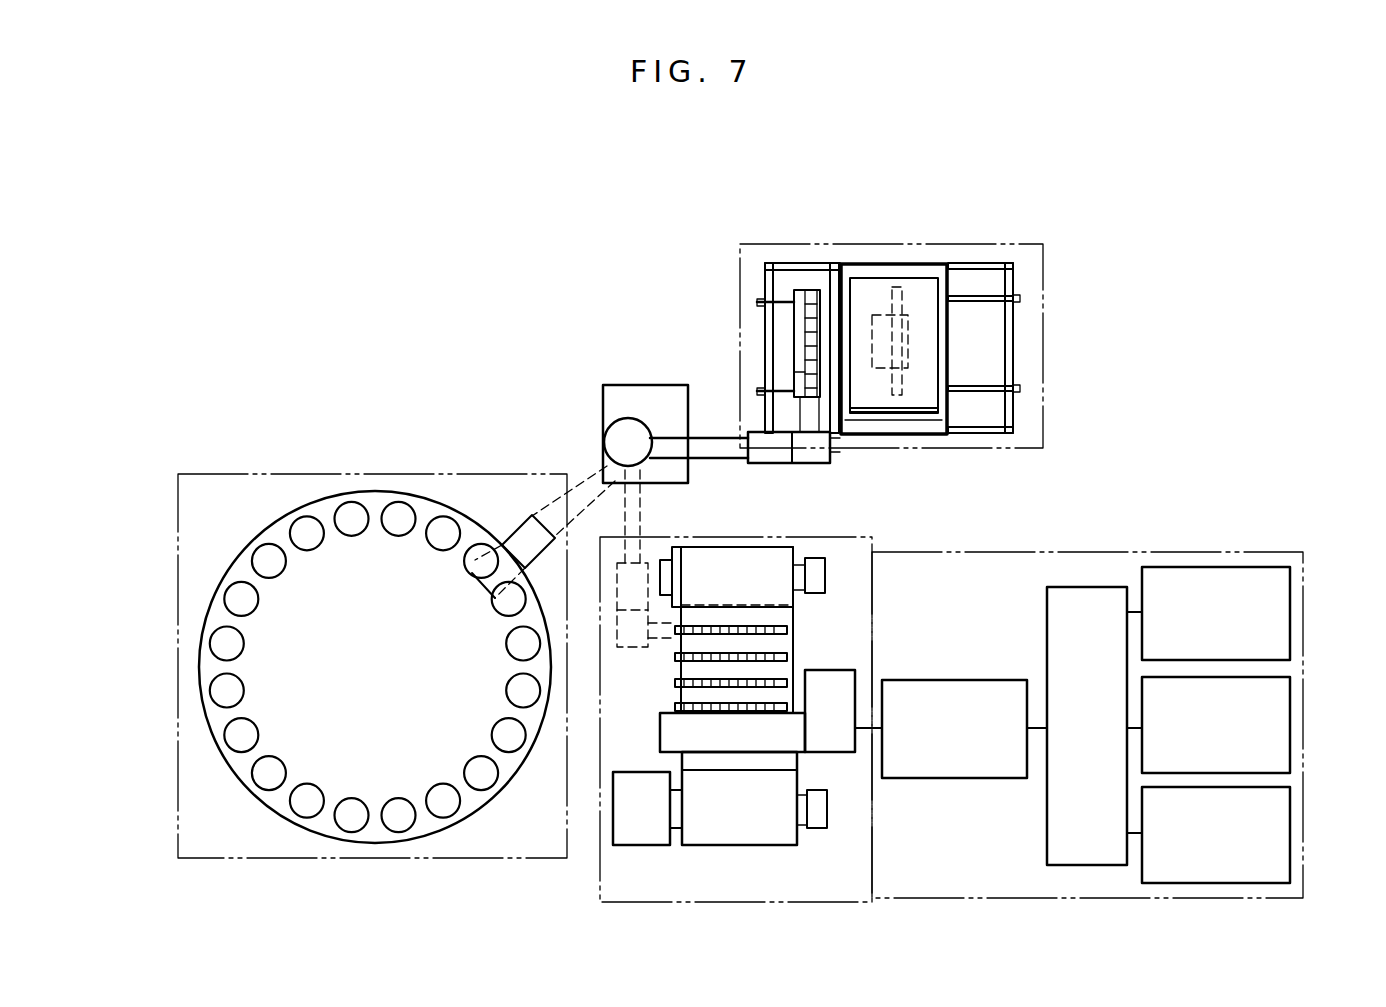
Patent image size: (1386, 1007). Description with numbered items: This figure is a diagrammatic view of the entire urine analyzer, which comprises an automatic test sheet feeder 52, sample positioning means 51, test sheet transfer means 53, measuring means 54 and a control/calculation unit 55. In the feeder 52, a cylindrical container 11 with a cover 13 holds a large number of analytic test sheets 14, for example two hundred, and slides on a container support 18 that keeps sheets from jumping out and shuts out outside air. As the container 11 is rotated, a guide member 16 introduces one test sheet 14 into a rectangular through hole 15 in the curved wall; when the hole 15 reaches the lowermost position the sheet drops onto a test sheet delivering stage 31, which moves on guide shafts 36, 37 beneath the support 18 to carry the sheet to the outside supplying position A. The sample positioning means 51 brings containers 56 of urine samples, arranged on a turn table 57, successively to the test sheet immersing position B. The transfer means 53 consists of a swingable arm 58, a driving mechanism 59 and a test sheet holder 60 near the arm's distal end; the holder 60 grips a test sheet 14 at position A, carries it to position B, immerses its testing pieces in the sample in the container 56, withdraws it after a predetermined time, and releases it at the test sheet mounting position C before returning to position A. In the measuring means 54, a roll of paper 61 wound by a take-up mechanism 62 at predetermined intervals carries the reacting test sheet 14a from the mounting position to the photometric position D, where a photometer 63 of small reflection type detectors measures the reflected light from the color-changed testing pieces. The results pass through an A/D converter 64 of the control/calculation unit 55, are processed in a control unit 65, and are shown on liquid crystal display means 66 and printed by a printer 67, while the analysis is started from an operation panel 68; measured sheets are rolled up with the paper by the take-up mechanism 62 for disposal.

The cylindrical container 11 is at (870, 292).
The cover 13 is at (932, 414).
The analytic test sheet 14 is at (797, 325).
The reacting test sheet 14a is at (773, 657).
The rectangular through hole 15 is at (905, 292).
The guide member 16 is at (880, 368).
The container support 18 is at (955, 287).
The test sheet delivering stage 31 is at (828, 300).
The guide shaft 36 is at (985, 318).
The guide shaft 37 is at (997, 400).
The sample positioning means 51 is at (372, 654).
The automatic test sheet feeder 52 is at (894, 334).
The test sheet transfer means 53 is at (705, 425).
The measuring means 54 is at (741, 724).
The control/calculation unit 55 is at (1116, 732).
The container 56 is at (398, 512).
The turn table 57 is at (347, 787).
The arm 58 is at (722, 458).
The driving mechanism 59 is at (605, 398).
The test sheet holder 60 is at (830, 462).
The roll of paper 61 is at (752, 553).
The take-up mechanism 62 is at (650, 845).
The photometer 63 is at (838, 752).
The A/D converter 64 is at (960, 680).
The control unit 65 is at (1047, 620).
The liquid crystal display means 66 is at (1290, 700).
The printer 67 is at (1210, 567).
The operation panel 68 is at (1190, 883).
The outside supplying position A is at (797, 372).
The test sheet immersing position B is at (480, 568).
The test sheet mounting position C is at (773, 632).
The photometric position D is at (665, 728).